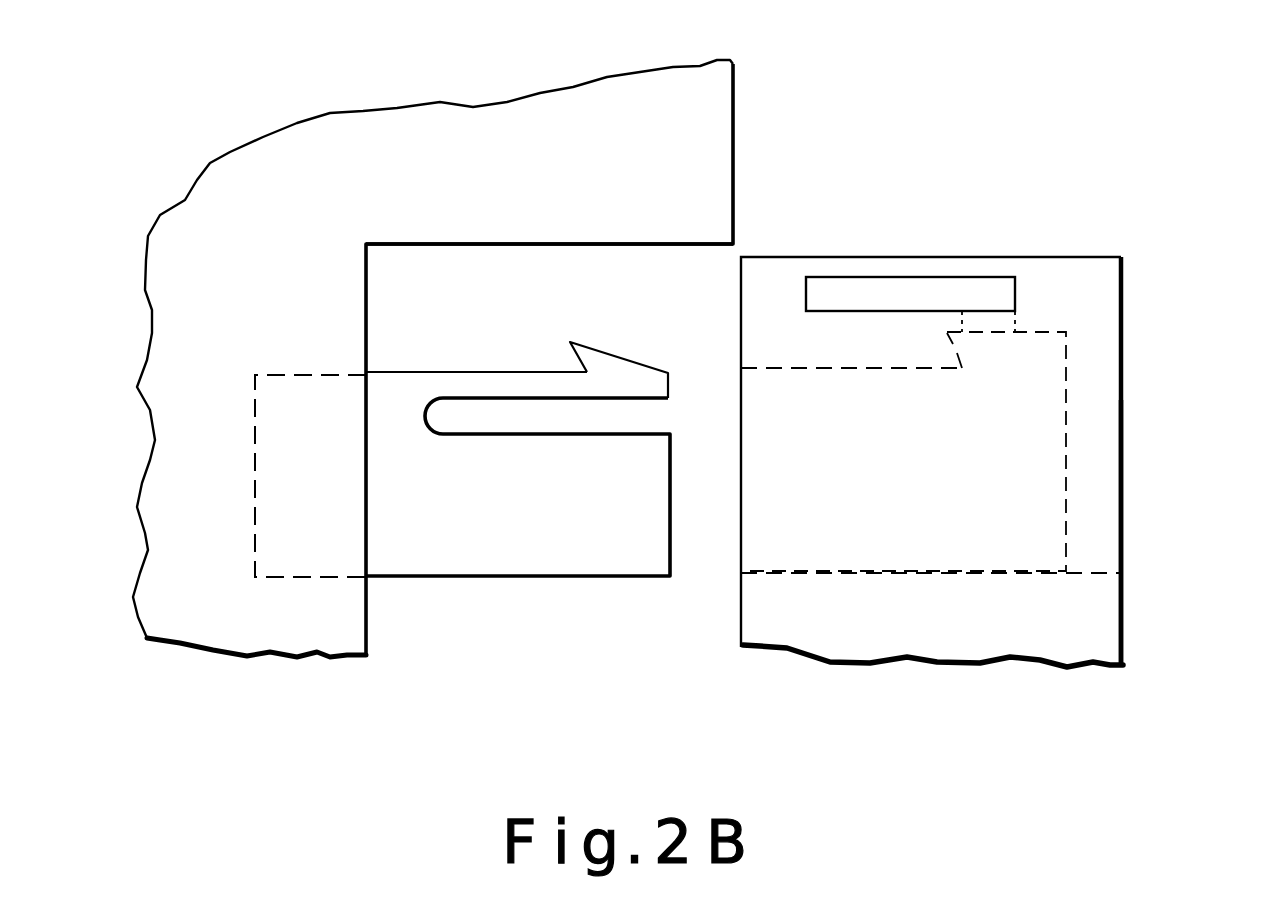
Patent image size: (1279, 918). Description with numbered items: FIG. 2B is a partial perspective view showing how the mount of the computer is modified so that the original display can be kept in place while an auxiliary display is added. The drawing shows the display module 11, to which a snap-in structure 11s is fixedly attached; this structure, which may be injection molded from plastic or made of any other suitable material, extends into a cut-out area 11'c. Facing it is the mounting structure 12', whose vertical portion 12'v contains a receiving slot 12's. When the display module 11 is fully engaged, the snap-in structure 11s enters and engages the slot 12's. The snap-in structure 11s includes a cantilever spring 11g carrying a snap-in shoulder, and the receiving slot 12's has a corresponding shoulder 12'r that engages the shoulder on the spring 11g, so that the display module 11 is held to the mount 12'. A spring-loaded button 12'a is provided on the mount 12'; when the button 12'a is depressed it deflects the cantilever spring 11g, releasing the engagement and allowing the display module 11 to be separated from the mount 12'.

The display module 11 is at (433, 353).
The cut-out area 11'c is at (549, 230).
The snap-in structure 11s is at (508, 372).
The cantilever spring 11g is at (606, 348).
The mounting structure 12' is at (1004, 452).
The spring-loaded button 12'a is at (913, 239).
The shoulder 12'r is at (903, 441).
The engagement slot 12's is at (931, 634).
The vertical portion 12'v is at (1194, 532).